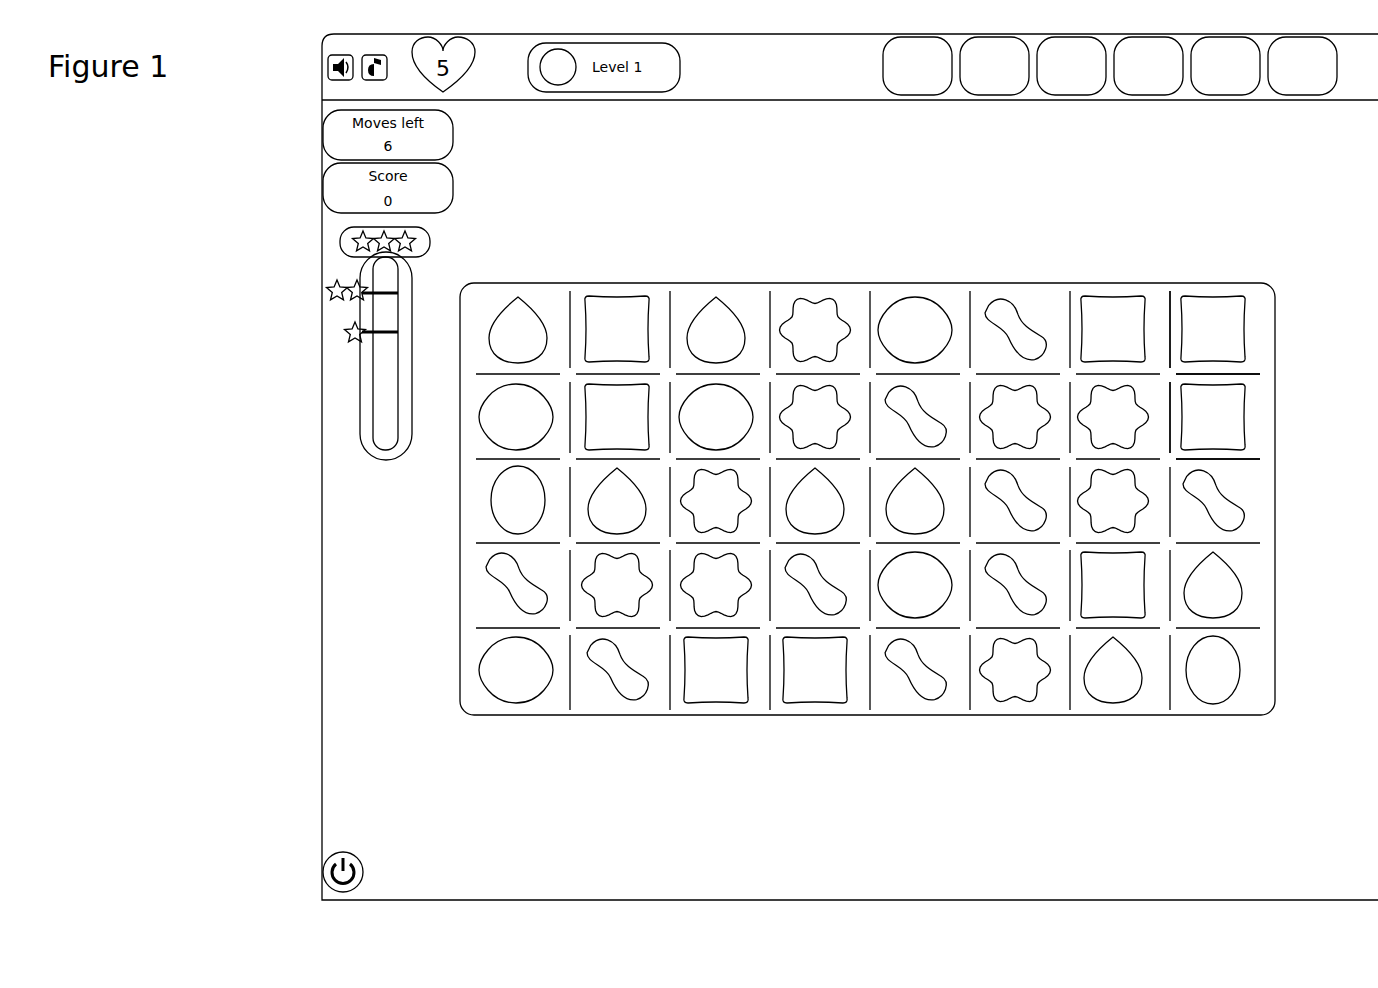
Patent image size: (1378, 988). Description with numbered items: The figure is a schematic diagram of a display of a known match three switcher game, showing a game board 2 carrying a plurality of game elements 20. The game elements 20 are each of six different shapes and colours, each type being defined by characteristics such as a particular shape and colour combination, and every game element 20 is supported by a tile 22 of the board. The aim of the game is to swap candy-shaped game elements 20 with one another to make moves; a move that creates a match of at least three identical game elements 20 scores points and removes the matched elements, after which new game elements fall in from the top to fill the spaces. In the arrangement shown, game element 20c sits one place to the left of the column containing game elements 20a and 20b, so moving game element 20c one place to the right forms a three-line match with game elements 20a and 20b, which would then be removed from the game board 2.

The game board 2 is at (907, 526).
The game elements 20 is at (1230, 339).
The game element 20a is at (1037, 522).
The game element 20b is at (1048, 591).
The game element 20c is at (927, 683).
The tile 22 is at (1250, 320).